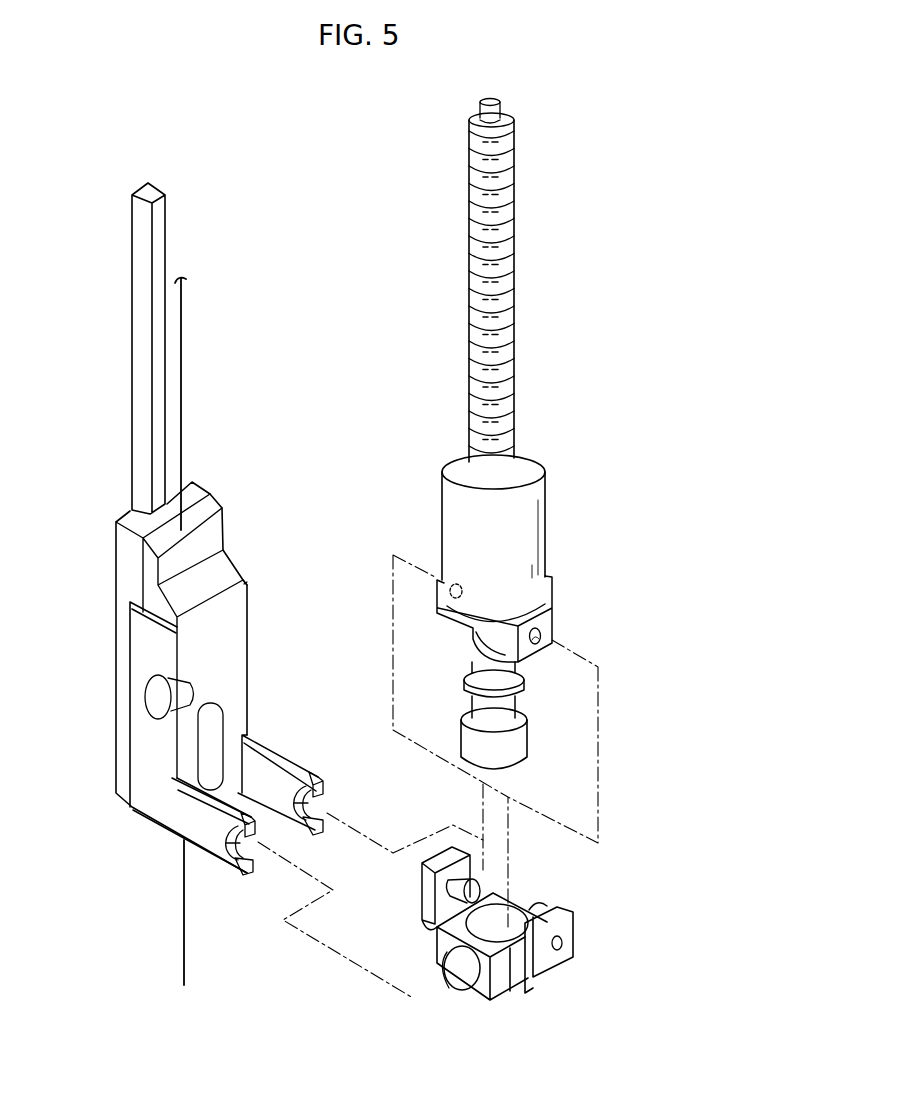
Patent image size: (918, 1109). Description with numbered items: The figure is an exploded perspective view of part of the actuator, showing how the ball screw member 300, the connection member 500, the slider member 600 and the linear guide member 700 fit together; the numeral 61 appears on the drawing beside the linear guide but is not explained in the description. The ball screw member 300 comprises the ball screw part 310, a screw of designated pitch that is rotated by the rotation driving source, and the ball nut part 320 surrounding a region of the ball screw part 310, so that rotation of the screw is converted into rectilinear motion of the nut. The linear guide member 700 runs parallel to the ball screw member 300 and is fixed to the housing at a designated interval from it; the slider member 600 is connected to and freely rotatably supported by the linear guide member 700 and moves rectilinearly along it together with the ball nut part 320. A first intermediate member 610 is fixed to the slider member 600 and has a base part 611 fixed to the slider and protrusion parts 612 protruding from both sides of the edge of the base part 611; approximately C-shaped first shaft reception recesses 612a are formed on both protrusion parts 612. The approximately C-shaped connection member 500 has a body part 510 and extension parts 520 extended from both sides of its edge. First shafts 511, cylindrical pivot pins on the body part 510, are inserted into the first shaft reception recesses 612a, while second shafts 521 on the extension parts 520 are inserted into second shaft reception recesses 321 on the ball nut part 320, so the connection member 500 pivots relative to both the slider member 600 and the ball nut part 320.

The wire 61 is at (183, 376).
The linear guide member 700 is at (137, 378).
The slider member 600 is at (119, 577).
The first intermediate member 610 is at (127, 841).
The base part 611 is at (152, 740).
The protrusion parts 612 is at (203, 832).
The first shaft reception recesses 612a is at (233, 865).
The ball screw member 300 is at (537, 261).
The ball screw part 310 is at (508, 296).
The ball nut part 320 is at (541, 470).
The second shaft reception recesses 321 is at (455, 590).
The connection member 500 is at (532, 993).
The body part 510 is at (500, 988).
The first shafts 511 is at (453, 977).
The extension parts 520 is at (565, 929).
The second shafts 521 is at (520, 923).